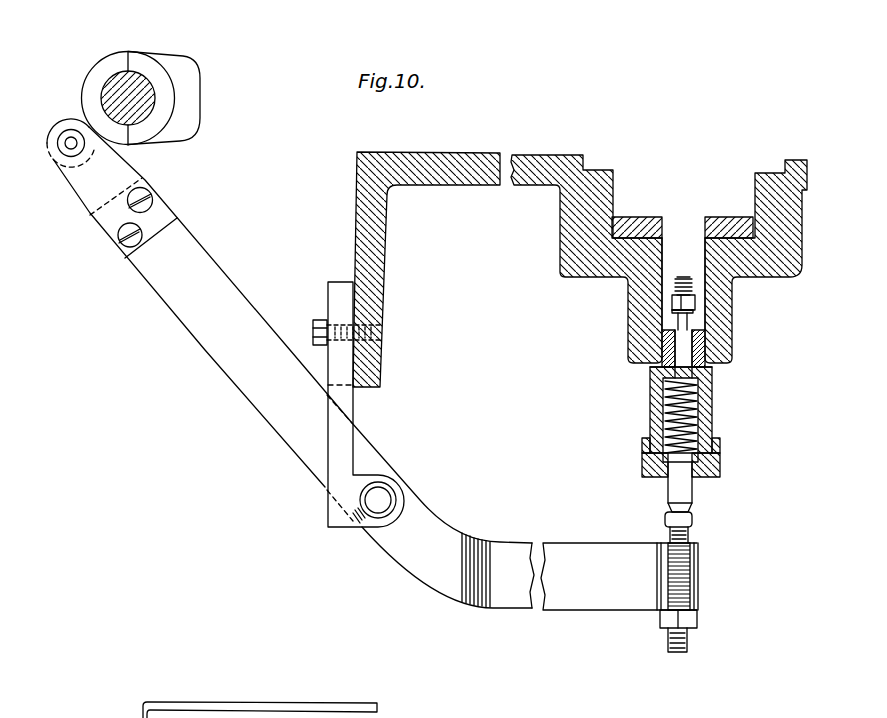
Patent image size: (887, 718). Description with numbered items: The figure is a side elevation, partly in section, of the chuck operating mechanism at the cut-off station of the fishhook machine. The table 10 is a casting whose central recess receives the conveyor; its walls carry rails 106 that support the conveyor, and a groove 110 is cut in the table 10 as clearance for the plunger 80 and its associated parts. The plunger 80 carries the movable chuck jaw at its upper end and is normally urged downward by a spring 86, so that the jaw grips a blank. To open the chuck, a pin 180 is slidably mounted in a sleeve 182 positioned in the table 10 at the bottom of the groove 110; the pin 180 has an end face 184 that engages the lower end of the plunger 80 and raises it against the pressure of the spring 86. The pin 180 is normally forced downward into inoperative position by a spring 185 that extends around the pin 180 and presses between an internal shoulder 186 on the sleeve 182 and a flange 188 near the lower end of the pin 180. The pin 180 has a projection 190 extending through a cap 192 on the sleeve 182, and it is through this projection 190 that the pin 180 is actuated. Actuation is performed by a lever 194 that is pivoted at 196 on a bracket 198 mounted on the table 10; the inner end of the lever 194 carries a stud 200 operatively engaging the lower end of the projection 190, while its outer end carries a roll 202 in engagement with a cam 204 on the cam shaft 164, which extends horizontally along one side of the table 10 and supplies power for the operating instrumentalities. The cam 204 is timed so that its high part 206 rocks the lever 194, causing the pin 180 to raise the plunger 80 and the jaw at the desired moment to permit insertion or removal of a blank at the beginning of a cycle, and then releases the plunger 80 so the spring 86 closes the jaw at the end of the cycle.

The table 10 is at (550, 168).
The rails 106 is at (710, 215).
The groove 110 is at (665, 248).
The plunger 80 is at (687, 317).
The spring 86 is at (690, 292).
The end face 184 is at (677, 327).
The pin 180 is at (693, 350).
The sleeve 182 is at (712, 393).
The internal shoulder 186 is at (653, 367).
The spring 185 is at (693, 430).
The cap 192 is at (650, 466).
The flange 188 is at (680, 462).
The projection 190 is at (677, 488).
The stud 200 is at (692, 520).
The lever 194 is at (599, 600).
The roll 202 is at (50, 144).
The cam 204 is at (103, 63).
The high part 206 is at (192, 88).
The cam shaft 164 is at (138, 92).
The bracket 198 is at (333, 448).
The pivot 196 is at (378, 508).